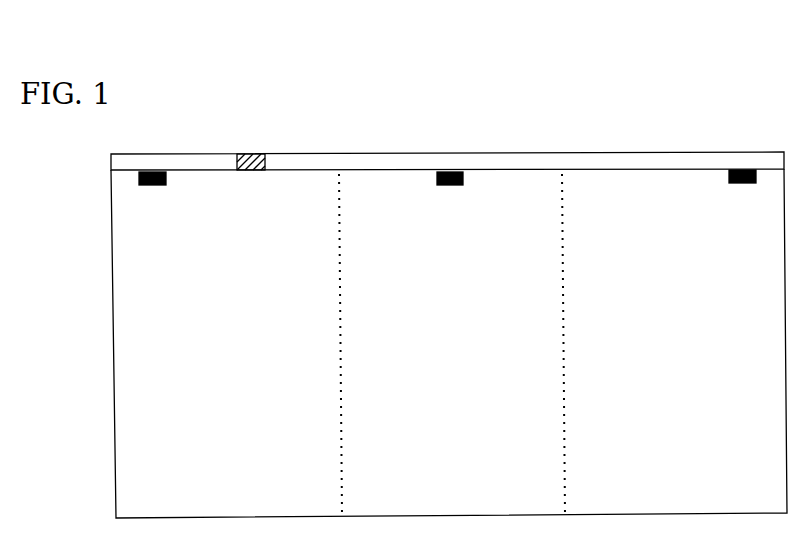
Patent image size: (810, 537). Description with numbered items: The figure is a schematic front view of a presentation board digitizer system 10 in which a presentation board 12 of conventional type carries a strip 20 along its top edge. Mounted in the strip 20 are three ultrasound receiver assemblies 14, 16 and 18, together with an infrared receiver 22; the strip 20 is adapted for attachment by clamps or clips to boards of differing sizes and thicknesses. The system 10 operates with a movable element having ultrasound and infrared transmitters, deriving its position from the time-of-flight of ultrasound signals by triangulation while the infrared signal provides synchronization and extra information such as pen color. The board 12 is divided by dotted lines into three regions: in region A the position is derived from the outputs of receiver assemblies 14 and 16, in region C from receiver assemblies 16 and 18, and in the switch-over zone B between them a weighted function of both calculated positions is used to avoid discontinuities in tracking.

The presentation board digitizer system 10 is at (680, 82).
The presentation board 12 is at (114, 364).
The ultrasound receiver assembly 14 is at (153, 172).
The ultrasound receiver assembly 16 is at (448, 171).
The ultrasound receiver assembly 18 is at (740, 169).
The strip 20 is at (347, 162).
The infrared receiver 22 is at (248, 154).